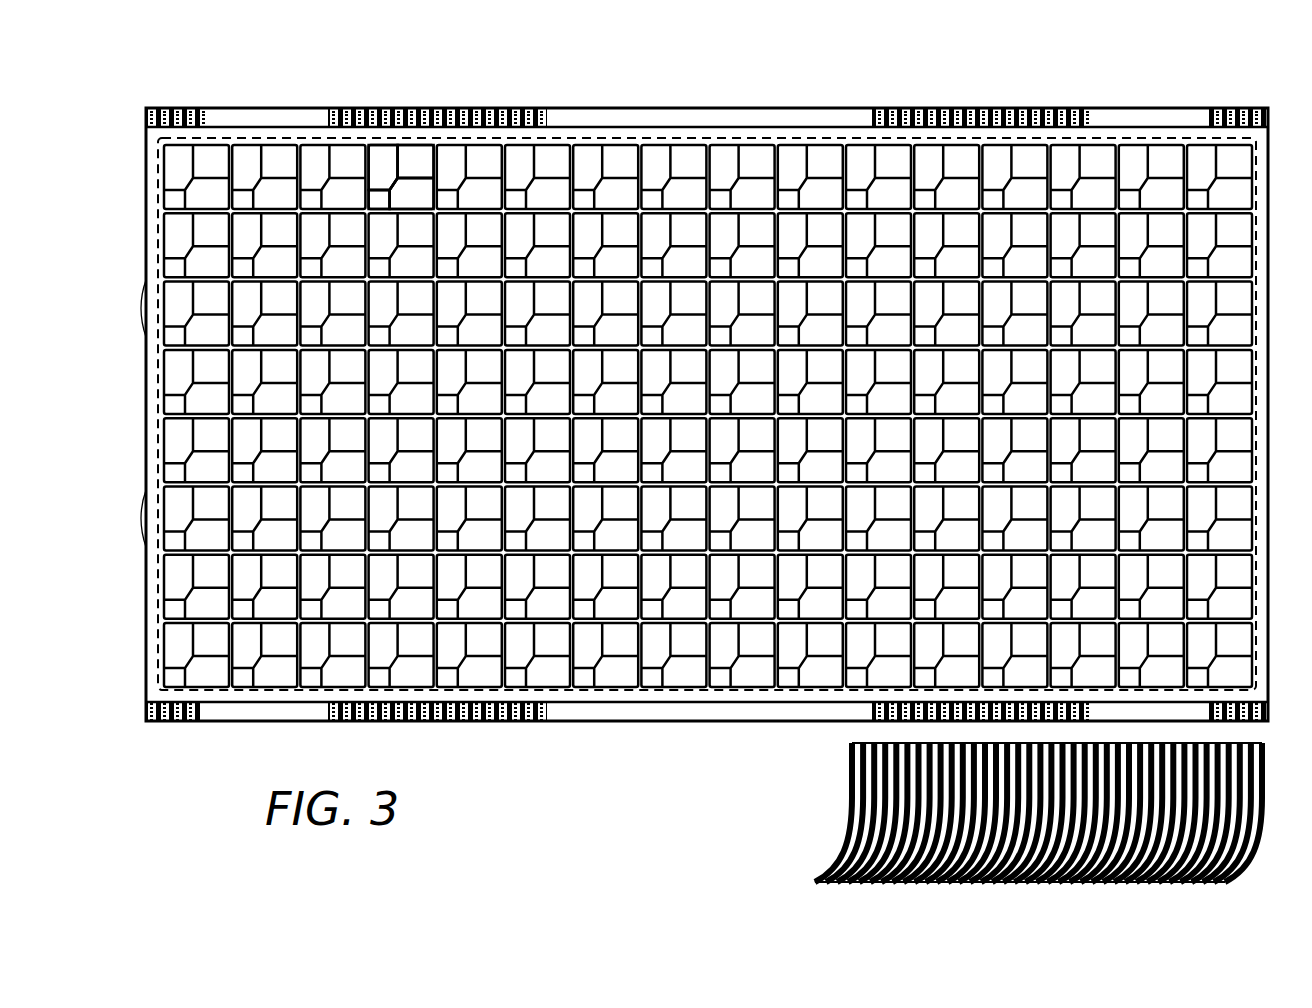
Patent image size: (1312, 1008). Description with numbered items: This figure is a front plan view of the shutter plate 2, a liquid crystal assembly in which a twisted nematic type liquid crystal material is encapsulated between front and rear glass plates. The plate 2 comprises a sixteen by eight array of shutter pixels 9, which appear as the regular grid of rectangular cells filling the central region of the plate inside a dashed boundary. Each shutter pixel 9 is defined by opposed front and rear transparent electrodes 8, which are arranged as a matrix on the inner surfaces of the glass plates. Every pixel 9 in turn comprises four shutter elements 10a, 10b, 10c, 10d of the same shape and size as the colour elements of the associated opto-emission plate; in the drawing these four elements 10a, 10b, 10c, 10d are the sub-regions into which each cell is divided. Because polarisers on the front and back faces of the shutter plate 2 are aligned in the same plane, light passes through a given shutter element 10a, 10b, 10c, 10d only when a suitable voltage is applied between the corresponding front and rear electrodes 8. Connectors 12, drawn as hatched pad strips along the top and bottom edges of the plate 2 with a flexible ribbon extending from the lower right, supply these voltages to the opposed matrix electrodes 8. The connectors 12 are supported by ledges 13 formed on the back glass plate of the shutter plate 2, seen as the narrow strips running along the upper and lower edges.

The shutter plate 2 is at (783, 84).
The transparent electrodes 8 is at (1130, 194).
The shutter pixels 9 is at (157, 402).
The shutter element 10a is at (386, 162).
The shutter element 10b is at (417, 162).
The shutter element 10c is at (419, 200).
The shutter element 10d is at (378, 202).
The connectors 12 is at (159, 105).
The ledges 13 is at (682, 118).